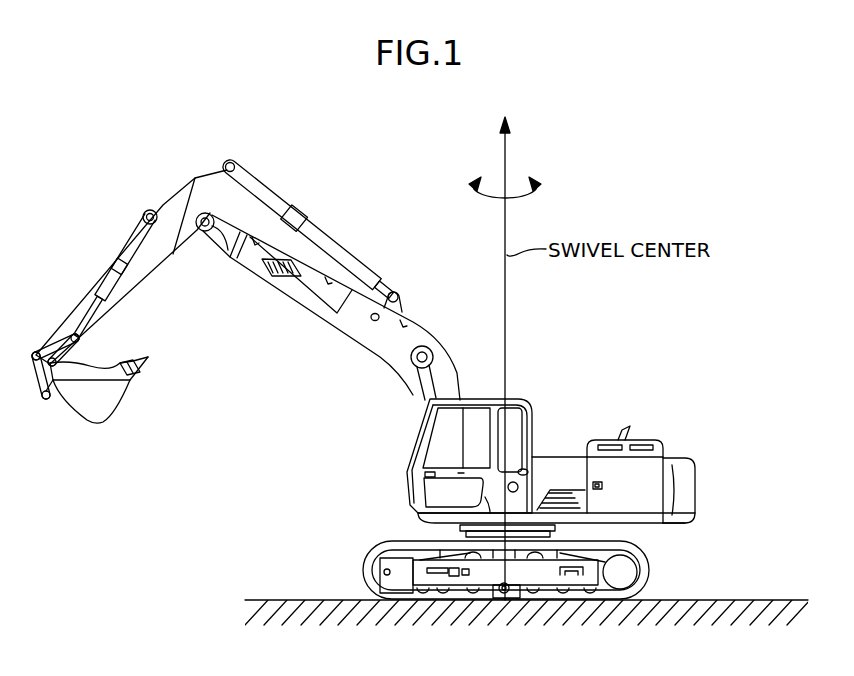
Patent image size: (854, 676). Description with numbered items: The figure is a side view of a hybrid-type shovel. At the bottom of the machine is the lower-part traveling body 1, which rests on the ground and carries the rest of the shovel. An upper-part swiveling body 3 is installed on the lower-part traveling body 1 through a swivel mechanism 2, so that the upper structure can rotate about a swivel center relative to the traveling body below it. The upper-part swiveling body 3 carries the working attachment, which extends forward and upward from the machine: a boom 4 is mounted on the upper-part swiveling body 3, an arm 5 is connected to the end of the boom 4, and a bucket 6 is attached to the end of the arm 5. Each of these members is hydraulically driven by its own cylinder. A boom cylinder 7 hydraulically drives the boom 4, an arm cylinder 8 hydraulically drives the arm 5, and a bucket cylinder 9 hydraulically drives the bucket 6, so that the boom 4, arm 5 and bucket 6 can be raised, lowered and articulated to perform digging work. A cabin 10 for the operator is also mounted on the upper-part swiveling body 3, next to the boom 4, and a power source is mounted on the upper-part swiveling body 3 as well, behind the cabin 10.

The lower-part traveling body 1 is at (363, 572).
The swivel mechanism 2 is at (560, 532).
The upper-part swiveling body 3 is at (562, 457).
The boom 4 is at (361, 327).
The arm 5 is at (153, 272).
The bucket 6 is at (88, 420).
The boom cylinder 7 is at (415, 393).
The arm cylinder 8 is at (350, 258).
The bucket cylinder 9 is at (113, 258).
The cabin 10 is at (518, 396).